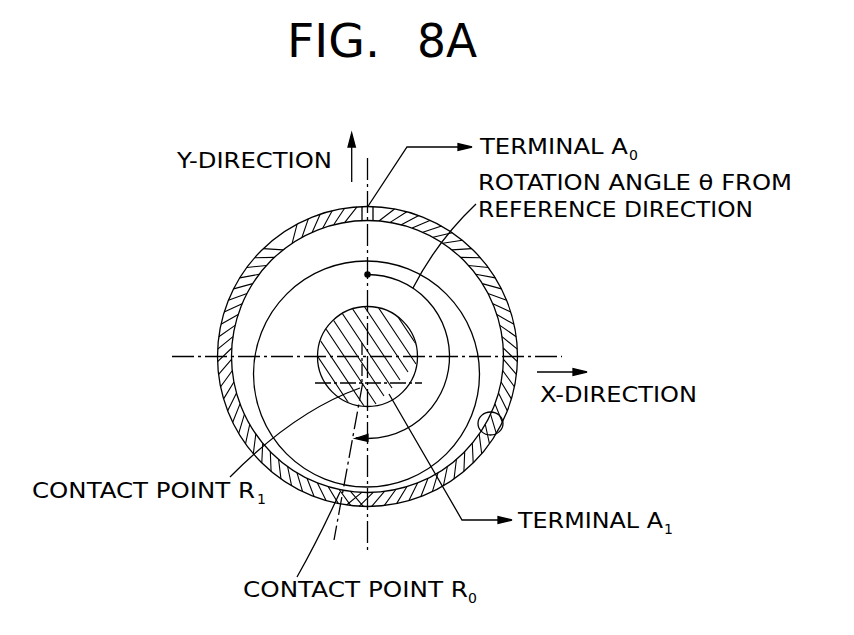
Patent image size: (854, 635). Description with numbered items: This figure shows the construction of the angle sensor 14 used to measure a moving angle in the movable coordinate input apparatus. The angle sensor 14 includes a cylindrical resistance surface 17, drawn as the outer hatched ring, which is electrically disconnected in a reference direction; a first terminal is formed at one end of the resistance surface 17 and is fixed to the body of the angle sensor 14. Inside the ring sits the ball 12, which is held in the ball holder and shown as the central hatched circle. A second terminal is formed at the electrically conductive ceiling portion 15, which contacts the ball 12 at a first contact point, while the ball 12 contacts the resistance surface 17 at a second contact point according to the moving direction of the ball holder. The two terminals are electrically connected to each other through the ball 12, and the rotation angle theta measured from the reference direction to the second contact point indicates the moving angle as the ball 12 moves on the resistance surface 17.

The ball 12 is at (268, 316).
The angle sensor 14 is at (498, 284).
The ceiling plate portion 15 is at (330, 330).
The cylindrical resistance surface 17 is at (500, 418).